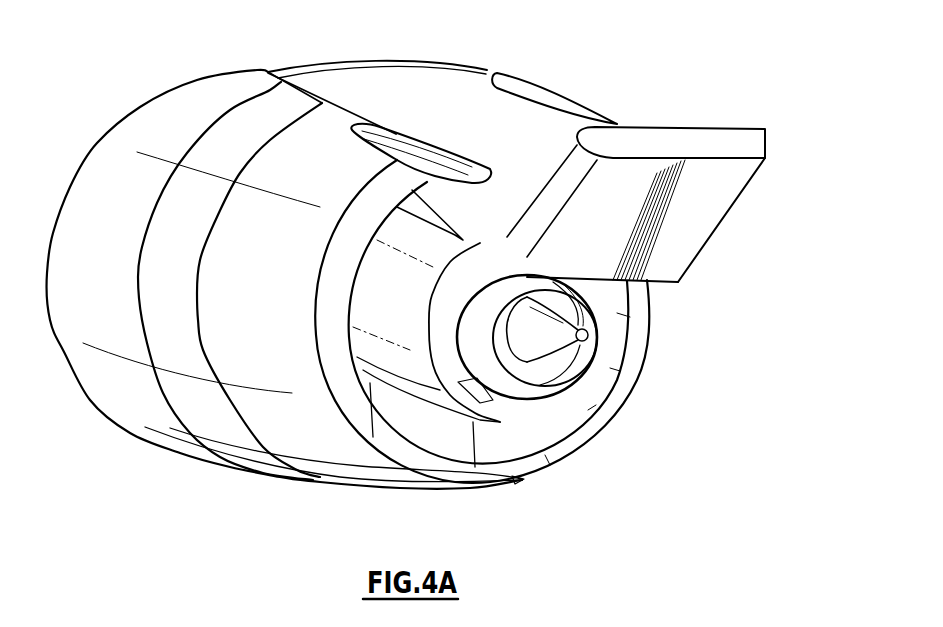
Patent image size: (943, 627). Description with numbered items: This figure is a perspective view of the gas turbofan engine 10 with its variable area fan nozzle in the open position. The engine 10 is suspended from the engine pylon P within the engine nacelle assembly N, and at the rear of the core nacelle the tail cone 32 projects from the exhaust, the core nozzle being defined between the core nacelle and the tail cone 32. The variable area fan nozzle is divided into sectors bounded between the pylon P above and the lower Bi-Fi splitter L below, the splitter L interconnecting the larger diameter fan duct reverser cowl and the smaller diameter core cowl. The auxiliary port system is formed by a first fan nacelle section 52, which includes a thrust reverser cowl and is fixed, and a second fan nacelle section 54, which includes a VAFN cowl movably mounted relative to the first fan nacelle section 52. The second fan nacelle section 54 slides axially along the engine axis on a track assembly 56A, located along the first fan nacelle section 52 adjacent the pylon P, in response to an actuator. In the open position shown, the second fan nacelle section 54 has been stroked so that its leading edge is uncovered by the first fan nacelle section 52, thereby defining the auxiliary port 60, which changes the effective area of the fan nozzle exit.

The engine nacelle assembly N is at (263, 53).
The engine pylon P is at (568, 81).
The gas turbofan engine 10 is at (769, 274).
The tail cone 32 is at (584, 329).
The first fan nacelle section 52 is at (317, 470).
The second fan nacelle section 54 is at (603, 407).
The track assembly 56A is at (410, 137).
The auxiliary port 60 is at (370, 187).
The lower Bi-Fi splitter L is at (442, 447).